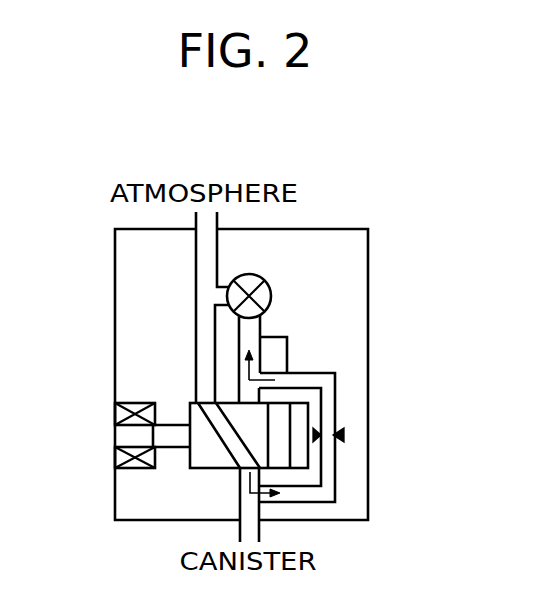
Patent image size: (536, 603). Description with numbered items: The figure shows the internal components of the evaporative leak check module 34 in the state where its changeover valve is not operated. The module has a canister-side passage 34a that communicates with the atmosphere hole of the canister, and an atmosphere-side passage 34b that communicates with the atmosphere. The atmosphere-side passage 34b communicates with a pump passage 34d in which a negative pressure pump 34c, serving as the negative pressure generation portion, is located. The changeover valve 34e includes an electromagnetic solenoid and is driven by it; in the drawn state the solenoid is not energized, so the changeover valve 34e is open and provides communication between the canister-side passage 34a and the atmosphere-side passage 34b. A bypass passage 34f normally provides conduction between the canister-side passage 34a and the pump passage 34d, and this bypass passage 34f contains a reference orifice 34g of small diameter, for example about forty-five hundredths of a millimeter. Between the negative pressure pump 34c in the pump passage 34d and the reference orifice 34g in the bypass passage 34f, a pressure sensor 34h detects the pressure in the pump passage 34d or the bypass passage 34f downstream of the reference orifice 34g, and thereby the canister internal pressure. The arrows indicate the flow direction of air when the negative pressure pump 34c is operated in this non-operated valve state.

The evaporative leak check module 34 is at (372, 193).
The canister-side passage 34a is at (247, 507).
The atmosphere-side passage 34b is at (204, 266).
The negative pressure pump 34c is at (272, 292).
The pump passage 34d is at (250, 328).
The changeover valve 34e is at (197, 461).
The bypass passage 34f is at (326, 404).
The reference orifice 34g is at (344, 435).
The pressure sensor 34h is at (278, 352).